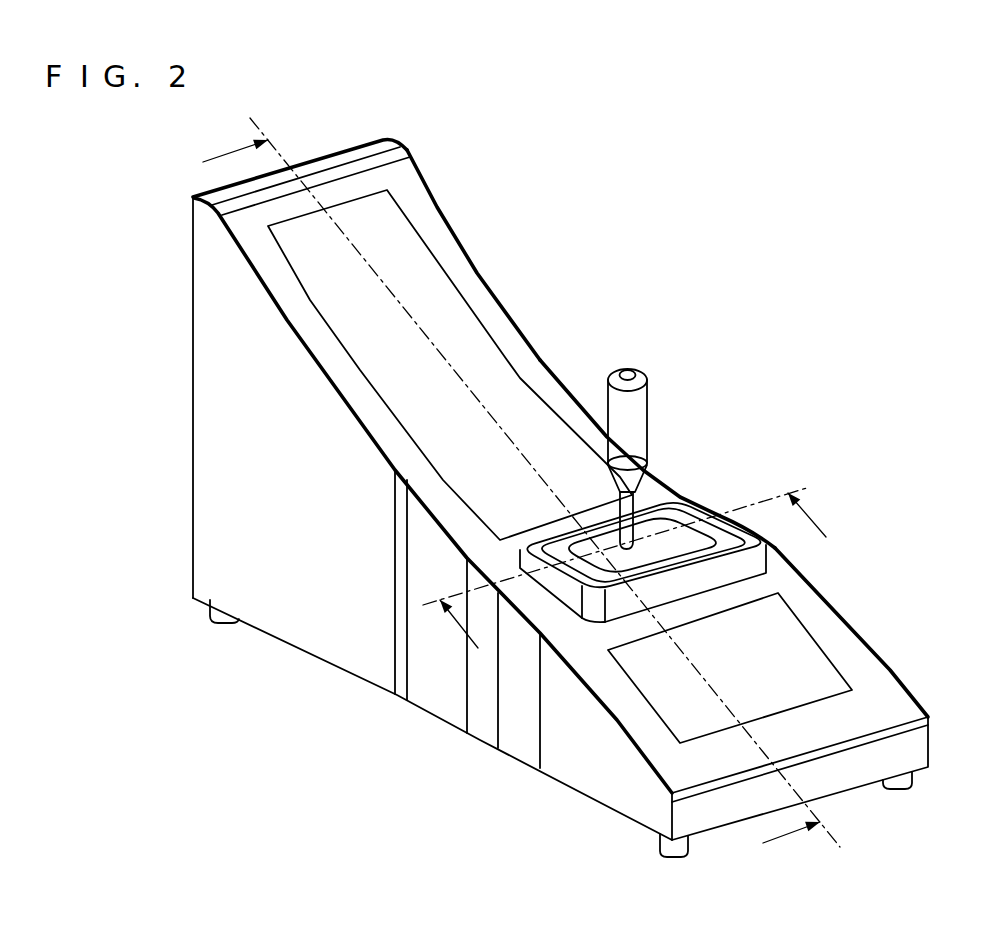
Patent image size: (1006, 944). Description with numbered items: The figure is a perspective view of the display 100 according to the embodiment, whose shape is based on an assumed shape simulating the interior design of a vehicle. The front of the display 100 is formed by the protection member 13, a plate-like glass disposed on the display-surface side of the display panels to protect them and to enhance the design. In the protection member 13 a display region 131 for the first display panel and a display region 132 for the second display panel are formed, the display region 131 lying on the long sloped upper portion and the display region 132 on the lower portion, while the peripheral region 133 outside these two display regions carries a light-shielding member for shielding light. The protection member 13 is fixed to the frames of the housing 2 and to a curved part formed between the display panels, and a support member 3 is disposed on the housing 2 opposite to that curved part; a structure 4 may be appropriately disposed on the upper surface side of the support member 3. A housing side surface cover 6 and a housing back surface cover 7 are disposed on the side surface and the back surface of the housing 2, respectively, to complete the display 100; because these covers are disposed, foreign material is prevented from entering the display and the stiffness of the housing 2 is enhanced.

The display 100 is at (307, 838).
The housing 2 is at (362, 158).
The support member 3 is at (660, 524).
The structure 4 is at (648, 404).
The housing side surface cover 6 is at (278, 638).
The housing back surface cover 7 is at (193, 415).
The protection member 13 is at (477, 283).
The display region 131 is at (400, 257).
The display region 132 is at (803, 670).
The peripheral region 133 is at (542, 353).